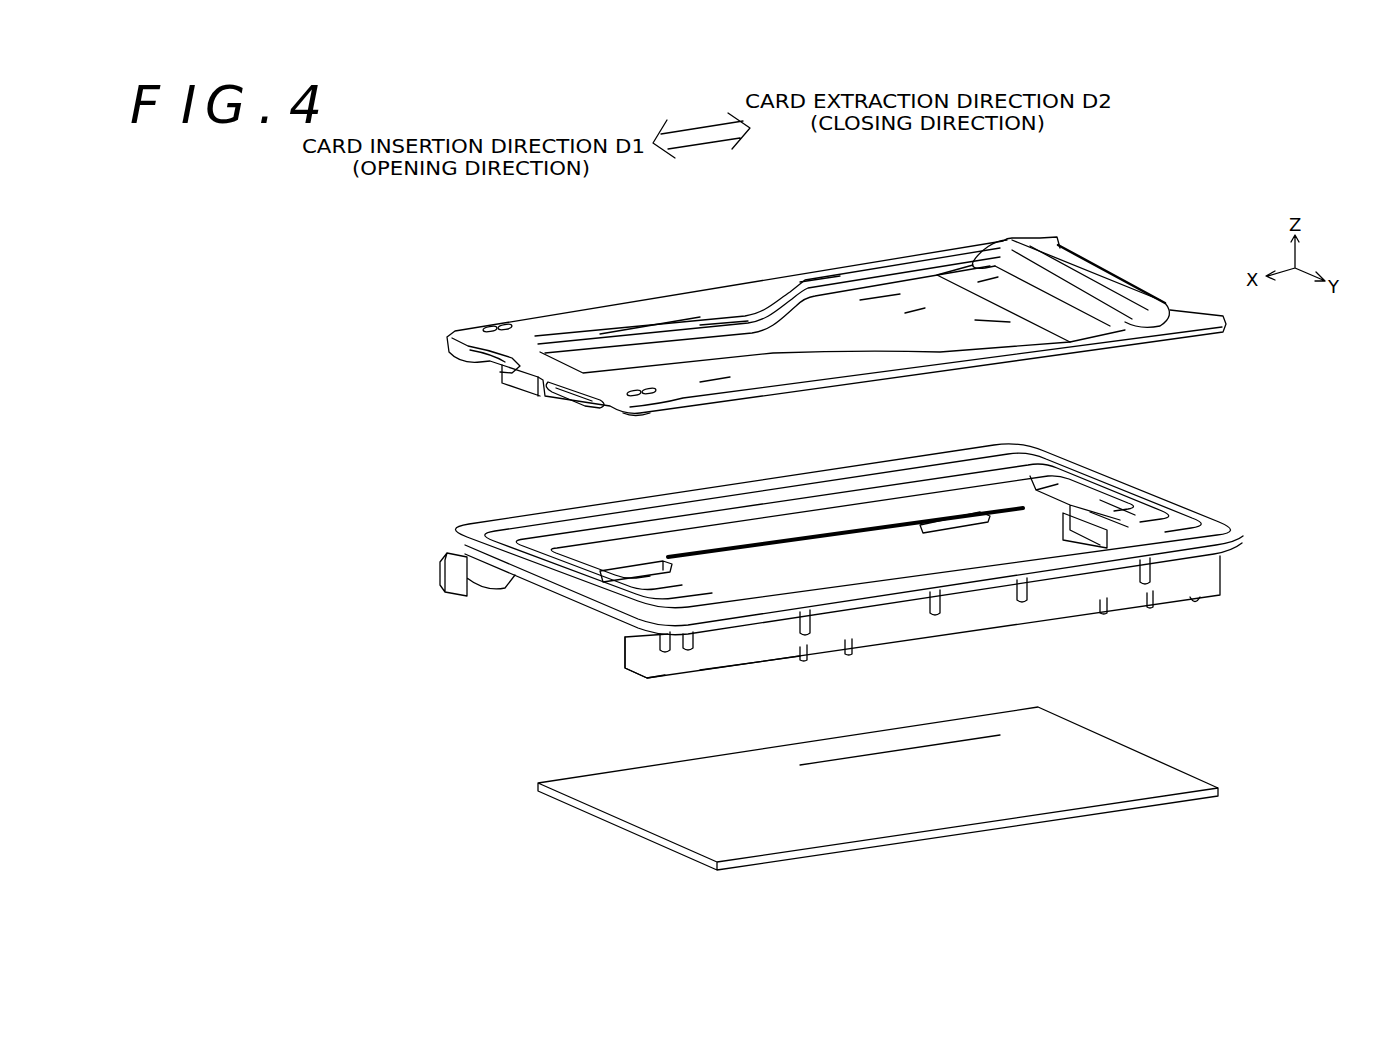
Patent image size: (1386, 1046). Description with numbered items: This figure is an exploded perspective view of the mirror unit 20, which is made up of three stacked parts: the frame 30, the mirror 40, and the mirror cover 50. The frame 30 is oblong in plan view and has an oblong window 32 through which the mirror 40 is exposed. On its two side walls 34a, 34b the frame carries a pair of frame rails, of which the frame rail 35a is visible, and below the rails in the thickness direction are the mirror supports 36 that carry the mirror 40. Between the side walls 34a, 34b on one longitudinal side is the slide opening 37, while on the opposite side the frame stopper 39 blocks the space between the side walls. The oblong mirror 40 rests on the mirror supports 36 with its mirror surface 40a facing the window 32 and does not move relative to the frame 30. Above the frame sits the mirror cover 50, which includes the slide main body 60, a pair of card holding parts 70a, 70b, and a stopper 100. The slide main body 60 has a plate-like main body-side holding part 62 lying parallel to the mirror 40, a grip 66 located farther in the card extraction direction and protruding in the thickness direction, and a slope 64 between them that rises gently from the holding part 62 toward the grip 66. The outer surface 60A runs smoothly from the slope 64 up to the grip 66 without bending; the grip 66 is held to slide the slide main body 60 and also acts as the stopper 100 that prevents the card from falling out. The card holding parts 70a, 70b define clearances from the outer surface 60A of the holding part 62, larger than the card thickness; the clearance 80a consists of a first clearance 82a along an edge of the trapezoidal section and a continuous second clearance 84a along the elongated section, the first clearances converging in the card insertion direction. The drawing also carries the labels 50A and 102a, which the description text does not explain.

The mirror unit 20 is at (1302, 368).
The frame 30 is at (1201, 475).
The window 32 is at (1093, 490).
The side wall 34a is at (473, 578).
The side wall 34b is at (750, 645).
The frame rail 35a is at (833, 508).
The mirror supports 36 is at (628, 568).
The slide opening 37 is at (573, 636).
The frame stopper 39 is at (1126, 530).
The mirror 40 is at (1137, 716).
The mirror surface 40a is at (912, 768).
The mirror cover 50 is at (1187, 362).
The cover upper surface 50A is at (886, 290).
The slide main body 60 is at (1095, 190).
The outer surface 60A is at (985, 327).
The main body-side holding part 62 is at (913, 310).
The slope 64 is at (987, 277).
The grip 66 is at (1032, 240).
The card holding part 70a is at (592, 312).
The card holding part 70b is at (716, 378).
The clearance 80a is at (757, 228).
The first clearance 82a is at (749, 306).
The second clearance 84a is at (701, 321).
The stopper 100 is at (935, 211).
The lock engaging portion 102a is at (835, 283).